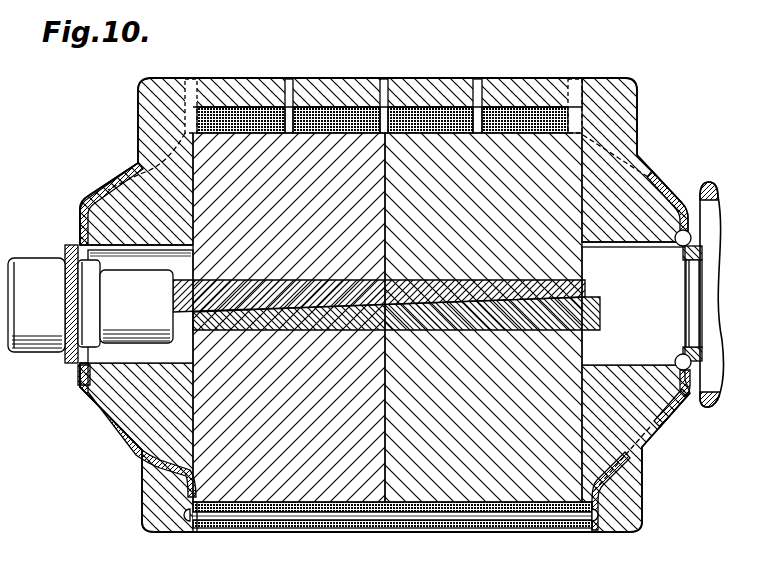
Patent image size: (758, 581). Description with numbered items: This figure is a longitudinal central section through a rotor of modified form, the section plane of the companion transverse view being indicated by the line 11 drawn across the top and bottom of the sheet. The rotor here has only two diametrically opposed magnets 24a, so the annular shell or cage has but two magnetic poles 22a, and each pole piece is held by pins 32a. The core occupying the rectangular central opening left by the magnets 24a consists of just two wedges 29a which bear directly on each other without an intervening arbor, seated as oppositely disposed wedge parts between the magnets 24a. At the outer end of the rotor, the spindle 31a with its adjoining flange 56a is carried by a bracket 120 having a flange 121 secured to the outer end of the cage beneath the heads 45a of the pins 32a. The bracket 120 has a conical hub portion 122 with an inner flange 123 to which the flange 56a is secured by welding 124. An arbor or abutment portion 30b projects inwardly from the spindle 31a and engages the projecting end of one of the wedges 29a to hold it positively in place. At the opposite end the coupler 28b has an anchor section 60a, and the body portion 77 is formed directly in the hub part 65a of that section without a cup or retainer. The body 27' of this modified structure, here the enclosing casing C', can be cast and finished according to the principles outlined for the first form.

The casing C' is at (385, 305).
The conical hub portion 122 is at (104, 188).
The flange 56a is at (72, 273).
The spindle 31a is at (40, 352).
The welding 124 is at (76, 382).
The bracket 120 is at (95, 421).
The heads 45a is at (185, 527).
The flange 121 is at (197, 531).
The pins 32a is at (264, 521).
The magnetic poles 22a is at (421, 107).
The section line 11 is at (504, 48).
The magnets 24a is at (305, 150).
The hub part 65a is at (672, 420).
The wedges 29a is at (568, 292).
The body portion 77 is at (648, 226).
The body 27' is at (635, 151).
The anchor section 60a is at (669, 181).
The coupler 28b is at (685, 191).
The inner flange 123 is at (88, 362).
The arbor or abutment portion 30b is at (136, 306).